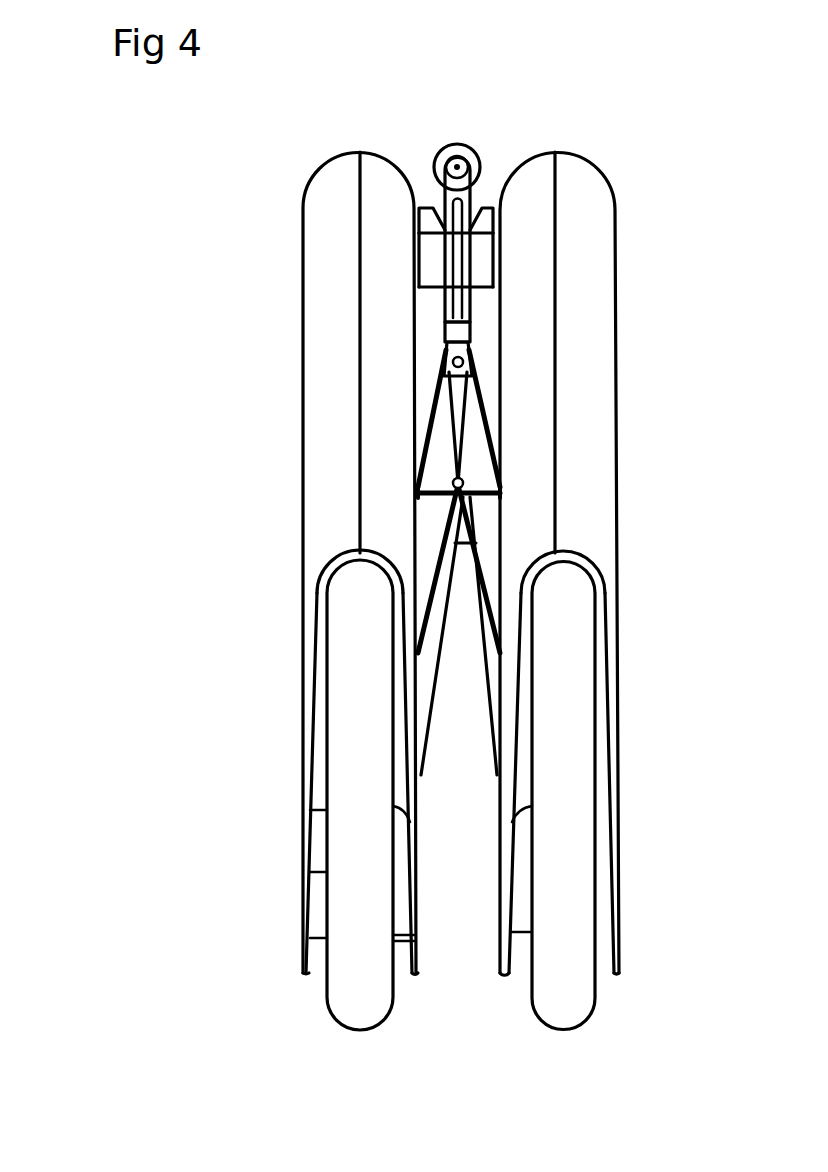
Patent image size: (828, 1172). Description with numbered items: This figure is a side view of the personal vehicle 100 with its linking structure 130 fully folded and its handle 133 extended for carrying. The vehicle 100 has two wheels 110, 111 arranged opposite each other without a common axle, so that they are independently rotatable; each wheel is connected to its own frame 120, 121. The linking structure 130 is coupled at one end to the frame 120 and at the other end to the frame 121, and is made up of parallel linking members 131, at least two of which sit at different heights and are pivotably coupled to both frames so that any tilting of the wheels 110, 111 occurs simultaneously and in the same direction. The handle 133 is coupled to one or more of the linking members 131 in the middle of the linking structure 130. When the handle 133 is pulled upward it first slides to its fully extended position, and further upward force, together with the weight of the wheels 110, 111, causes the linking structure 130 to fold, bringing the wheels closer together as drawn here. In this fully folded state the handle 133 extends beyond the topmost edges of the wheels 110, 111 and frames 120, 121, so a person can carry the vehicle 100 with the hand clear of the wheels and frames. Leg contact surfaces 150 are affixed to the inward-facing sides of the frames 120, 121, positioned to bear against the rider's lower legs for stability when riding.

The vehicle 100 is at (128, 478).
The wheel 110 is at (350, 1015).
The wheel 111 is at (553, 1015).
The frame 120 is at (312, 360).
The frame 121 is at (610, 392).
The linking structure 130 is at (467, 824).
The linking members 131 is at (492, 670).
The handle 133 is at (459, 142).
The leg contact surfaces 150 is at (407, 205).